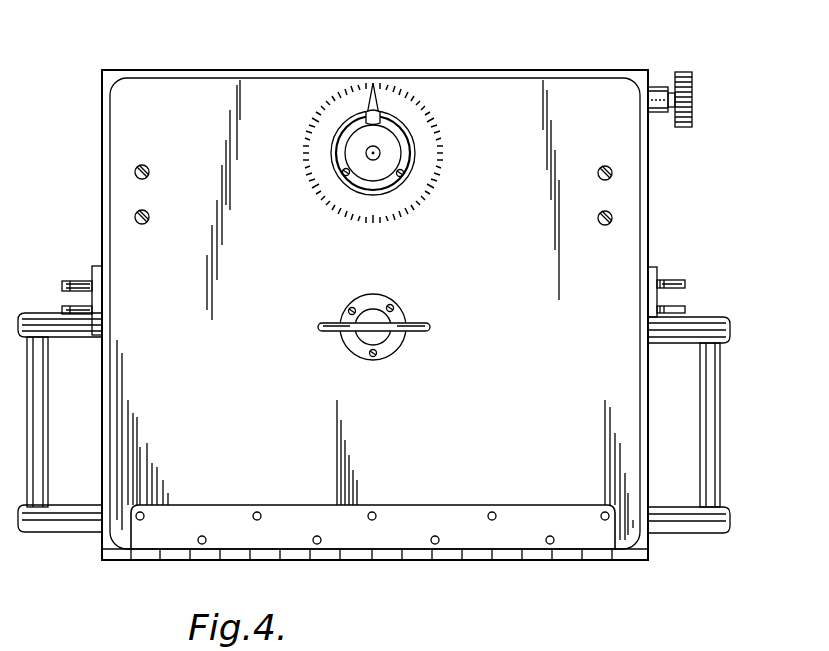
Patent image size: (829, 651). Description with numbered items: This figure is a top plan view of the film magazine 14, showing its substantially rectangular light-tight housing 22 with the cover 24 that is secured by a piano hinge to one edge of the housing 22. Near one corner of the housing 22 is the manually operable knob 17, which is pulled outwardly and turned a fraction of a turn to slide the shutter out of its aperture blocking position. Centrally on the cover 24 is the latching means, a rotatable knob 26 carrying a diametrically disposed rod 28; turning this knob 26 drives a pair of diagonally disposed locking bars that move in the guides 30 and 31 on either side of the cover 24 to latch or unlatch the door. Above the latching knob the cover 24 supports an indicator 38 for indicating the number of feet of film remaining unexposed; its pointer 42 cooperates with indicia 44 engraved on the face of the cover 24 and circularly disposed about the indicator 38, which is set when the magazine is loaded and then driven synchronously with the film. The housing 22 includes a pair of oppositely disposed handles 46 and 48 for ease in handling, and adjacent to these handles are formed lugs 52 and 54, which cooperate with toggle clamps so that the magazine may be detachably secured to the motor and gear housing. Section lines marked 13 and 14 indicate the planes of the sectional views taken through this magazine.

The section line 13- 13 is at (374, 57).
The film magazine 14 is at (592, 192).
The manually operable knob 17 is at (685, 72).
The light-tight housing 22 is at (102, 200).
The cover 24 is at (276, 293).
The rotatable knob 26 is at (377, 311).
The diametrically disposed rod 28 is at (413, 323).
The guide 30 is at (150, 178).
The guide 31 is at (610, 180).
The indicator 38 is at (413, 147).
The pointer 42 is at (385, 100).
The indicia 44 is at (440, 136).
The handle 46 is at (48, 417).
The handle 48 is at (700, 406).
The lug 52 is at (73, 281).
The lug 54 is at (660, 276).